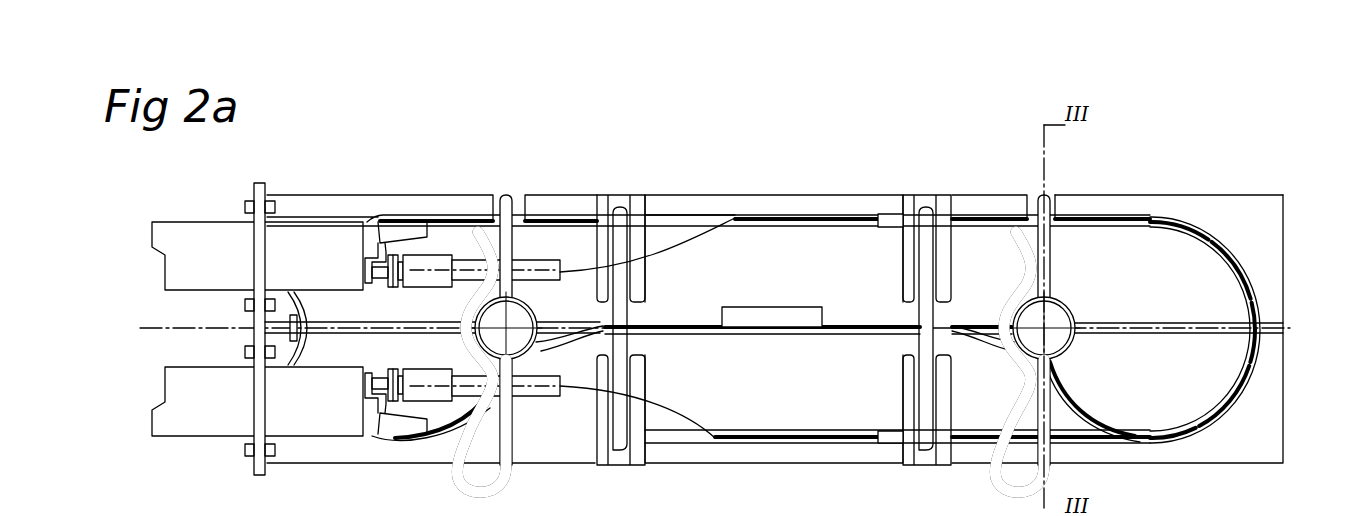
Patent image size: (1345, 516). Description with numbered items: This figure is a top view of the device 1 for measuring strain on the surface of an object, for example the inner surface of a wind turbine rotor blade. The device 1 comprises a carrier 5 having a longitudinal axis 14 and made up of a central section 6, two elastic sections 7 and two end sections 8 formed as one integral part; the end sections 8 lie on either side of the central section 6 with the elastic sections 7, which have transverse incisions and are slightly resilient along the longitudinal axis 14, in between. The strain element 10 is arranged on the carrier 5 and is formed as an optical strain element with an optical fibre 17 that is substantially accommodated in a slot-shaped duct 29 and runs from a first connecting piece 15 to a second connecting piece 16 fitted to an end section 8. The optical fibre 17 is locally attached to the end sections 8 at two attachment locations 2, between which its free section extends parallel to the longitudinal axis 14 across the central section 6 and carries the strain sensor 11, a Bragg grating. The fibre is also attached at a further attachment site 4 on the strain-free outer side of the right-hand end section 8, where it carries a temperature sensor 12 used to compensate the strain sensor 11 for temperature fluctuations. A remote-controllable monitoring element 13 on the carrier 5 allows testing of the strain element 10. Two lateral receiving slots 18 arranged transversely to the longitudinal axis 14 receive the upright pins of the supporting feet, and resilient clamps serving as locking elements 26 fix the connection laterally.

The device 1 is at (1116, 186).
The attachment location 2 is at (598, 326).
The further attachment site 4 is at (1268, 349).
The carrier 5 is at (1190, 212).
The central section 6 is at (752, 212).
The elastic section 7 is at (623, 203).
The end section 8 is at (311, 207).
The strain element 10 is at (702, 345).
The strain sensor 11 is at (790, 330).
The temperature sensor 12 is at (1222, 253).
The monitoring element 13 is at (768, 316).
The longitudinal axis 14 is at (134, 328).
The first connecting piece 15 is at (197, 238).
The second connecting piece 16 is at (198, 415).
The optical fibre 17 is at (660, 421).
The lateral receiving slot 18 is at (518, 203).
The locking element 26 is at (458, 476).
The slot-shaped duct 29 is at (668, 216).